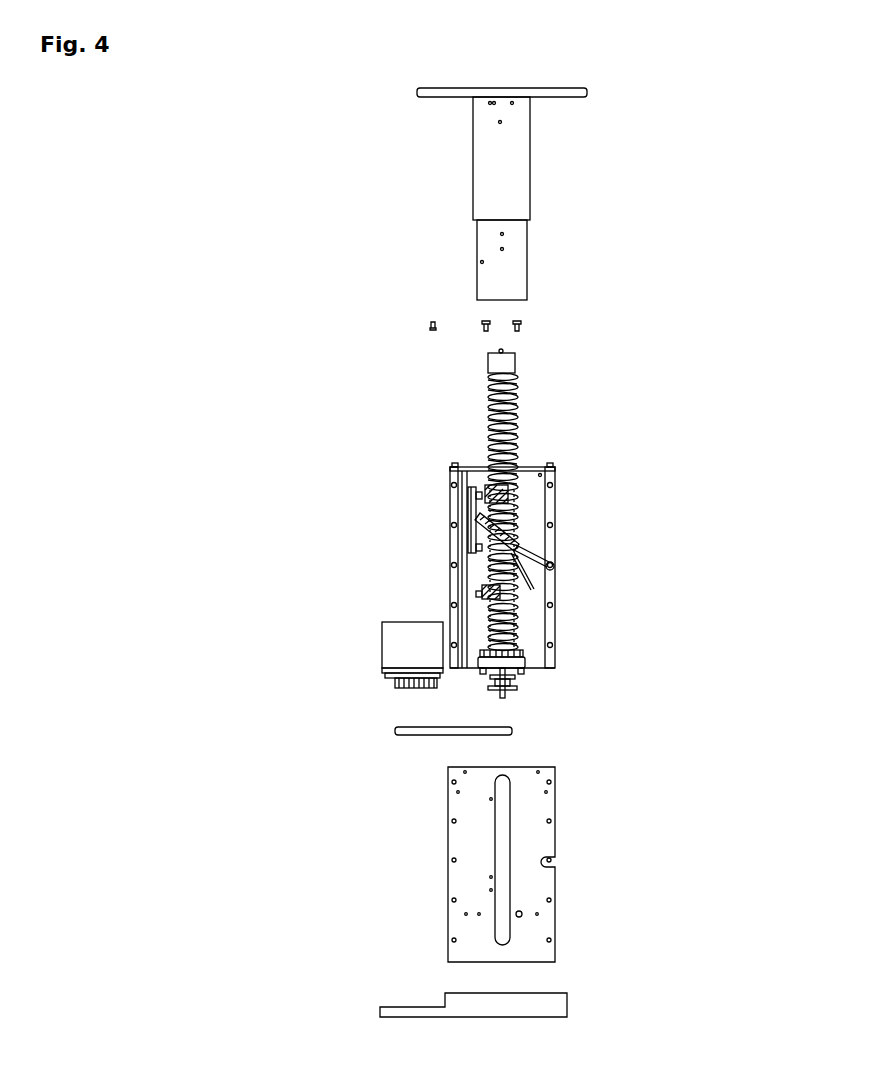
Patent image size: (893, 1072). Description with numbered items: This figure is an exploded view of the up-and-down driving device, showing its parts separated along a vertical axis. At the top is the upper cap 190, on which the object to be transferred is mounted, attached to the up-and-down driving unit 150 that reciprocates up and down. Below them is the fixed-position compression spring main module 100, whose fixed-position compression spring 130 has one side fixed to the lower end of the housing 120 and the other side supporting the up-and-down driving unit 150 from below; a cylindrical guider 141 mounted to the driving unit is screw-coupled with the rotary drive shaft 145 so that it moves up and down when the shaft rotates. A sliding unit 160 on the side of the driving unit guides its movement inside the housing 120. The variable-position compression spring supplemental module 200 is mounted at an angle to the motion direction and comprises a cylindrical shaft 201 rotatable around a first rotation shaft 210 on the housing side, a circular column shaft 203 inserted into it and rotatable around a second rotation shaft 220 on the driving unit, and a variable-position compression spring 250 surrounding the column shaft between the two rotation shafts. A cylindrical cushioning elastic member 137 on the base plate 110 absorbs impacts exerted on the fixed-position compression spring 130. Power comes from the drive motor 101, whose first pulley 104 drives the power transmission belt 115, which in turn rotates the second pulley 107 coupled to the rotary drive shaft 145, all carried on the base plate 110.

The fixed-position compression spring main module 100 is at (534, 500).
The drive motor 101 is at (403, 633).
The first pulley 104 is at (401, 689).
The second pulley 107 is at (510, 682).
The base plate 110 is at (380, 1012).
The power transmission belt 115 is at (395, 734).
The housing 120 is at (449, 878).
The fixed-position compression spring 130 is at (480, 594).
The cushioning elastic member 137 is at (505, 662).
The cylindrical guider 141 is at (490, 363).
The rotary drive shaft 145 is at (522, 650).
The up-and-down driving unit 150 is at (477, 280).
The sliding unit 160 is at (470, 545).
The upper cap 190 is at (417, 93).
The variable-position compression spring supplemental module 200 is at (563, 563).
The cylindrical shaft 201 is at (532, 569).
The circular column shaft 203 is at (530, 590).
The first rotation shaft 210 is at (554, 567).
The second rotation shaft 220 is at (484, 501).
The variable-position compression spring 250 is at (505, 535).